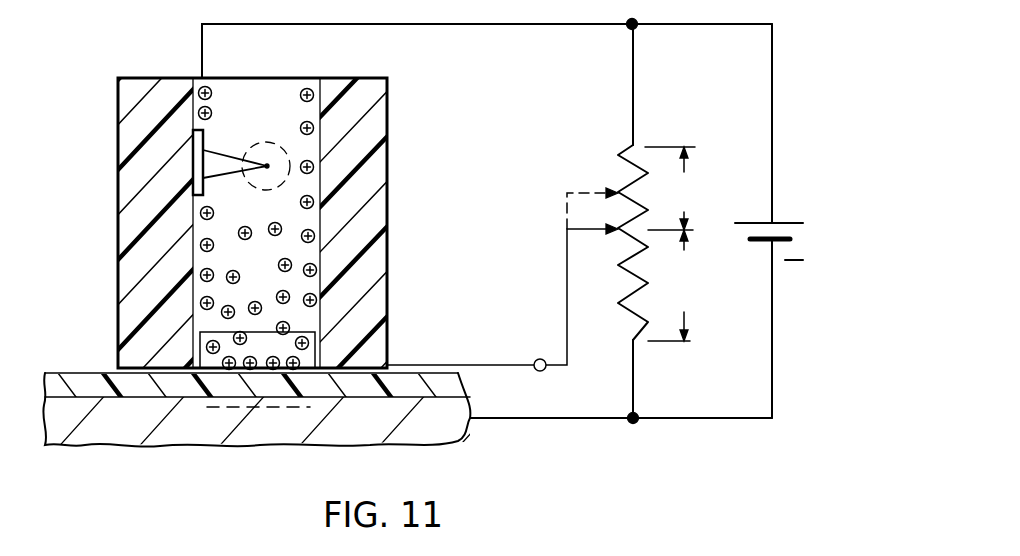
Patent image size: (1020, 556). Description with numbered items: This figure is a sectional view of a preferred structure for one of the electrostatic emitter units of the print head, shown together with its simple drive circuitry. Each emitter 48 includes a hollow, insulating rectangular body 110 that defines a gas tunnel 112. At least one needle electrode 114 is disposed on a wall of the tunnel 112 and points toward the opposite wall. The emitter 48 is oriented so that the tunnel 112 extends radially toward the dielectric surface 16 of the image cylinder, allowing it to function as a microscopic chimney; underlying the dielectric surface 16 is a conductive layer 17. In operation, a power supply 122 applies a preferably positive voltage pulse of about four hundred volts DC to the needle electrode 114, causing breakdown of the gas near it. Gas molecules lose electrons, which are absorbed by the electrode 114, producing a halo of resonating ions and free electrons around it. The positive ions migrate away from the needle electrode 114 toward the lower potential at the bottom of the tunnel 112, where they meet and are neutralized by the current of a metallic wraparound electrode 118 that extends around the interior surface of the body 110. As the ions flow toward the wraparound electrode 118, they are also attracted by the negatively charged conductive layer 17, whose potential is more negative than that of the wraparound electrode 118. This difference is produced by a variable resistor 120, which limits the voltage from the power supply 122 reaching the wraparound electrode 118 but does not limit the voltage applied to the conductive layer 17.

The dielectric surface 16 is at (84, 373).
The conductive layer 17 is at (127, 430).
The emitter 48 is at (388, 186).
The insulating rectangular body 110 is at (374, 243).
The gas tunnel 112 is at (281, 88).
The needle electrode 114 is at (229, 152).
The wraparound electrode 118 is at (222, 398).
The variable resistor 120 is at (645, 150).
The power supply 122 is at (812, 212).